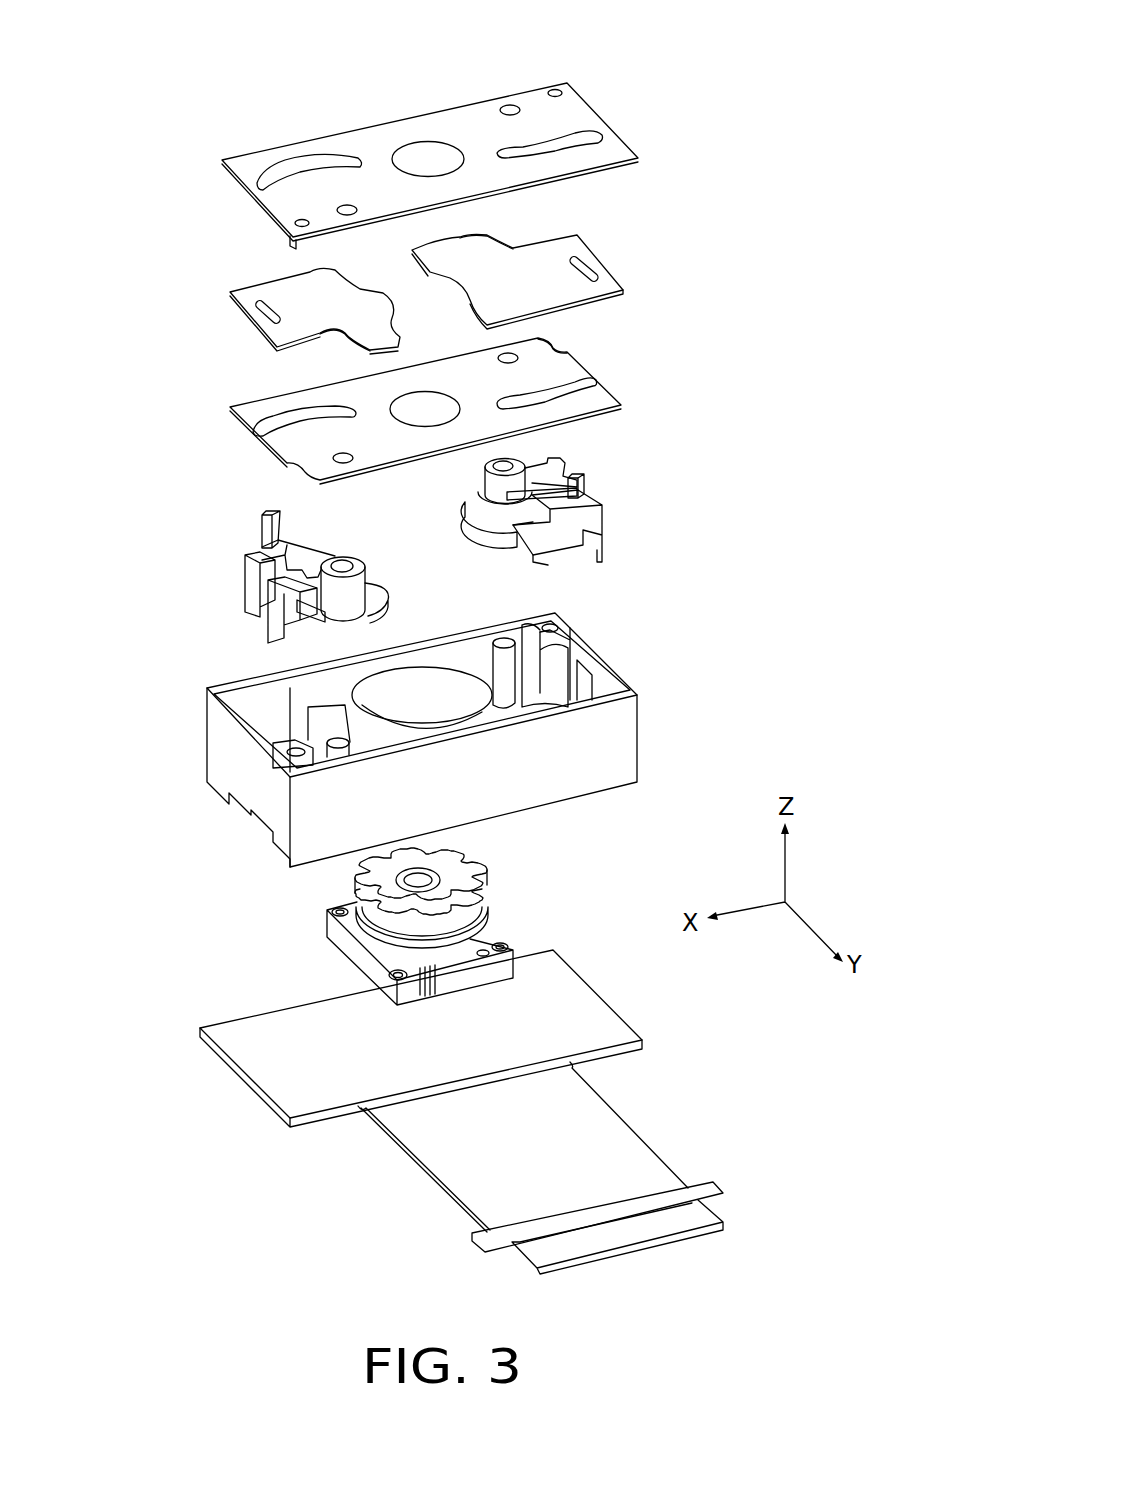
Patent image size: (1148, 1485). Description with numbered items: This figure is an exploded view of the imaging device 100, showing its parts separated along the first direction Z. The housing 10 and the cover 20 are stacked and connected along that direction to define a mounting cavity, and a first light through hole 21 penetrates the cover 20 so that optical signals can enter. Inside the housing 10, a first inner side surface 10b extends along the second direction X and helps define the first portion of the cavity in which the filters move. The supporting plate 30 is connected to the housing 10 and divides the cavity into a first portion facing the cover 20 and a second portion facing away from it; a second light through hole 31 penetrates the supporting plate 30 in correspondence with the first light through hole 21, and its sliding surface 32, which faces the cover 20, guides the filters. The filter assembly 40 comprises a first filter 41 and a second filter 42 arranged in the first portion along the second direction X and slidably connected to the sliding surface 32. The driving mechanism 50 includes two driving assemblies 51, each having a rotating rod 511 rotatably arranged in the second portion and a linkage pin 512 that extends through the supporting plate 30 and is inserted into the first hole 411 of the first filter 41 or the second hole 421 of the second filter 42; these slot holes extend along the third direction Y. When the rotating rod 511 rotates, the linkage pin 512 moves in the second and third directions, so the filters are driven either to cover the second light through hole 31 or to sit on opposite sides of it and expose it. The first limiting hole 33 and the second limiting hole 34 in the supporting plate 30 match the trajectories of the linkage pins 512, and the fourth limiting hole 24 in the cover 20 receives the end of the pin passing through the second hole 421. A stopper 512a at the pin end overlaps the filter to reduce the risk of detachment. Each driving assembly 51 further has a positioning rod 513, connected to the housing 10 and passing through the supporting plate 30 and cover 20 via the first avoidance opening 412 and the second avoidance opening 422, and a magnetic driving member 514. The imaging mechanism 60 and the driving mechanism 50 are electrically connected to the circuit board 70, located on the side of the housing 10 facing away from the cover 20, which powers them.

The imaging device 100 is at (532, 42).
The housing 10 is at (440, 727).
The first inner side surface 10b is at (418, 655).
The cover 20 is at (428, 162).
The first light through hole 21 is at (397, 150).
The fourth limiting hole 24 is at (245, 166).
The supporting plate 30 is at (436, 400).
The second light through hole 31 is at (432, 392).
The sliding surface 32 is at (565, 356).
The first limiting hole 33 is at (597, 380).
The second limiting hole 34 is at (248, 429).
The filter assembly 40 is at (479, 291).
The first filter 41 is at (555, 267).
The first hole 411 is at (598, 268).
The first avoidance opening 412 is at (528, 243).
The second filter 42 is at (277, 323).
The second hole 421 is at (250, 304).
The second avoidance opening 422 is at (303, 350).
The driving mechanism 50 is at (500, 565).
The driving assembly 51 is at (440, 565).
The rotating rod 511 is at (503, 490).
The linkage pin 512 is at (597, 508).
The stopper 512a is at (583, 473).
The positioning rod 513 is at (561, 631).
The magnetic driving member 514 is at (437, 582).
The imaging mechanism 60 is at (480, 930).
The circuit board 70 is at (590, 1003).